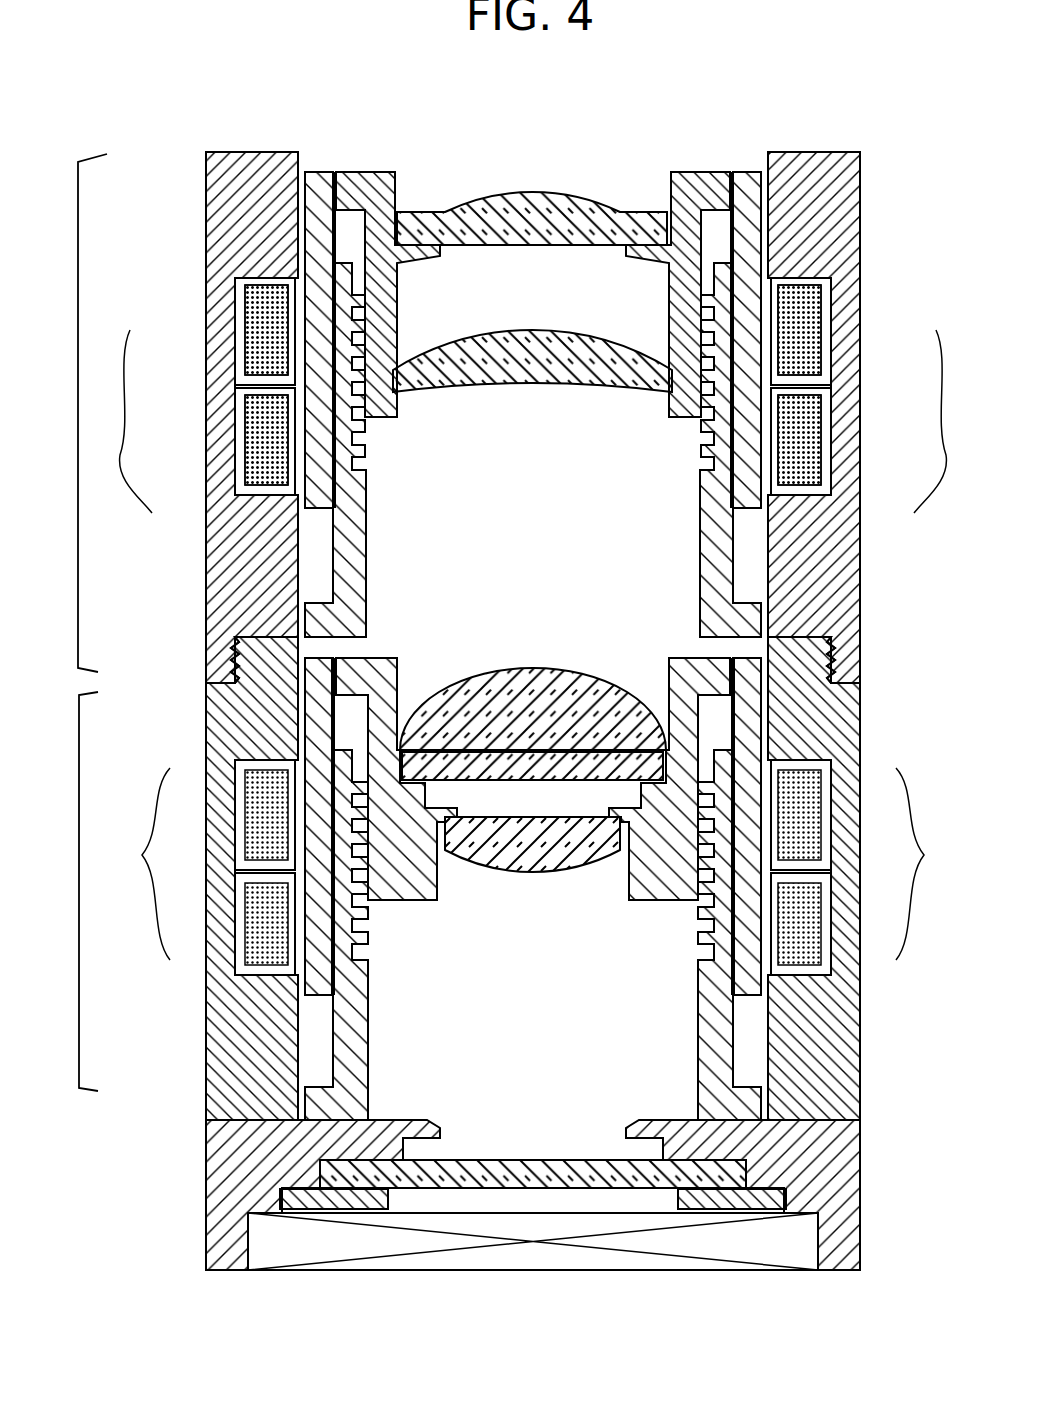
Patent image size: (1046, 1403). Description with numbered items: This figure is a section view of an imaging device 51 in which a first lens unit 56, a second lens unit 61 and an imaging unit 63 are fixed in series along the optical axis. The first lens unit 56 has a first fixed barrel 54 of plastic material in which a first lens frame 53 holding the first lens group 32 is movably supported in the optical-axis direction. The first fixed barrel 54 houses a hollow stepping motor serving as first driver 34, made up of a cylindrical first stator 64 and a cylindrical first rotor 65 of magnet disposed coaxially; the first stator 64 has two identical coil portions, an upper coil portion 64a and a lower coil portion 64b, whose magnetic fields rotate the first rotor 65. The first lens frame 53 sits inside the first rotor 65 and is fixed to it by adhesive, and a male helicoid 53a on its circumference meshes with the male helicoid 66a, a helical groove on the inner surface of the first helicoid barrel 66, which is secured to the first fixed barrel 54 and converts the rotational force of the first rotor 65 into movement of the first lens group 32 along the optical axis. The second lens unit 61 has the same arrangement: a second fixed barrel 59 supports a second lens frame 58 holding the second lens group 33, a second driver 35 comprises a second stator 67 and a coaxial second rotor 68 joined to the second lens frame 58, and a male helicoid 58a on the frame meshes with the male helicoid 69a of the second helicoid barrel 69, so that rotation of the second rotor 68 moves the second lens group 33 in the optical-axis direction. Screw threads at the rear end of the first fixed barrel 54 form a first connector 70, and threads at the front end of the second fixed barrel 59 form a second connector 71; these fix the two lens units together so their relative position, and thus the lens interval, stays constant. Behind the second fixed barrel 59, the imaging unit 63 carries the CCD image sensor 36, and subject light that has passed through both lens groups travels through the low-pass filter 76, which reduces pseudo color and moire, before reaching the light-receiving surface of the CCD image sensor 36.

The imaging device 51 is at (318, 105).
The first lens group 32 is at (510, 345).
The second lens group 33 is at (500, 835).
The hollow stepping motor (first driver) 34 is at (522, 421).
The hollow stepping motor (second driver) 35 is at (533, 864).
The CCD image sensor 36 is at (533, 1270).
The first lens frame 53 is at (380, 405).
The male helicoid 53a is at (365, 300).
The first fixed barrel 54 is at (235, 195).
The first lens unit 56 is at (78, 405).
The second lens frame 58 is at (380, 900).
The male helicoid 58a is at (380, 850).
The second fixed barrel 59 is at (245, 735).
The second lens unit 61 is at (79, 900).
The imaging unit 63 is at (98, 1135).
The first stator 64 is at (160, 252).
The upper coil portion 64a is at (255, 293).
The lower coil portion 64b is at (255, 440).
The first rotor 65 is at (280, 517).
The first helicoid barrel (first conversion mechanism) 66 is at (350, 520).
The male helicoid 66a is at (365, 435).
The second stator 67 is at (252, 810).
The second rotor 68 is at (300, 872).
The second helicoid barrel (second conversion mechanism) 69 is at (235, 1047).
The male helicoid 69a is at (350, 950).
The first connector 70 is at (235, 655).
The second connector 71 is at (330, 625).
The low-pass filter 76 is at (500, 1160).